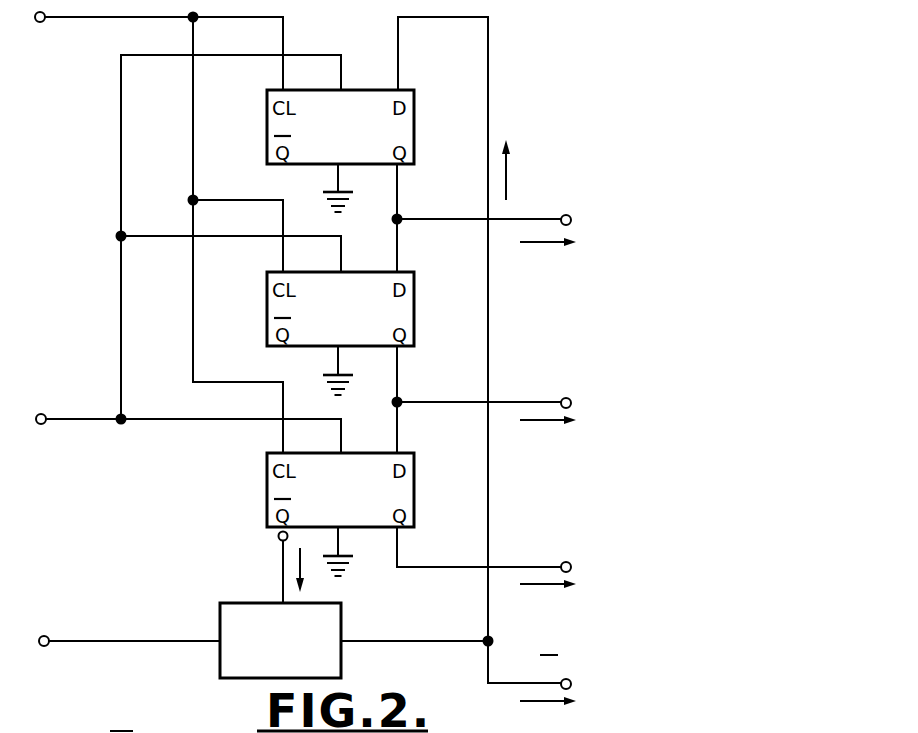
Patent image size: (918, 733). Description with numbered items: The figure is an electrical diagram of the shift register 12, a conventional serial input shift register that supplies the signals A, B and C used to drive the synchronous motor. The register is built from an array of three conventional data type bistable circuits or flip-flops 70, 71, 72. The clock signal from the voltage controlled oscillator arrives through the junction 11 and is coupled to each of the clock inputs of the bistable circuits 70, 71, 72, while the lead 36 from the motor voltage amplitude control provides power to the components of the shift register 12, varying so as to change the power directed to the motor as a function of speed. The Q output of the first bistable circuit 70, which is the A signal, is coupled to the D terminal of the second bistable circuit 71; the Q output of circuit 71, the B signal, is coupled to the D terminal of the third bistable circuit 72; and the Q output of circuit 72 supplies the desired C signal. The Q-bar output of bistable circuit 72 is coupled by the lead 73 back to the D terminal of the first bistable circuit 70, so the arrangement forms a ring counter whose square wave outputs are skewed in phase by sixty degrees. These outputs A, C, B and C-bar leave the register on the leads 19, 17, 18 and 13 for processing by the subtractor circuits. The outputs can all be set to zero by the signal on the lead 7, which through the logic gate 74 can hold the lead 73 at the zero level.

The lead 7 is at (94, 641).
The junction 11 is at (98, 17).
The shift register 12 is at (526, 77).
The lead 13 is at (487, 663).
The lead 17 is at (436, 567).
The lead 18 is at (435, 402).
The lead 19 is at (435, 219).
The lead 36 is at (71, 421).
The bistable circuit 70 is at (267, 120).
The bistable circuit 71 is at (267, 302).
The bistable circuit 72 is at (267, 495).
The lead 73 is at (410, 641).
The logic gate 74 is at (245, 603).